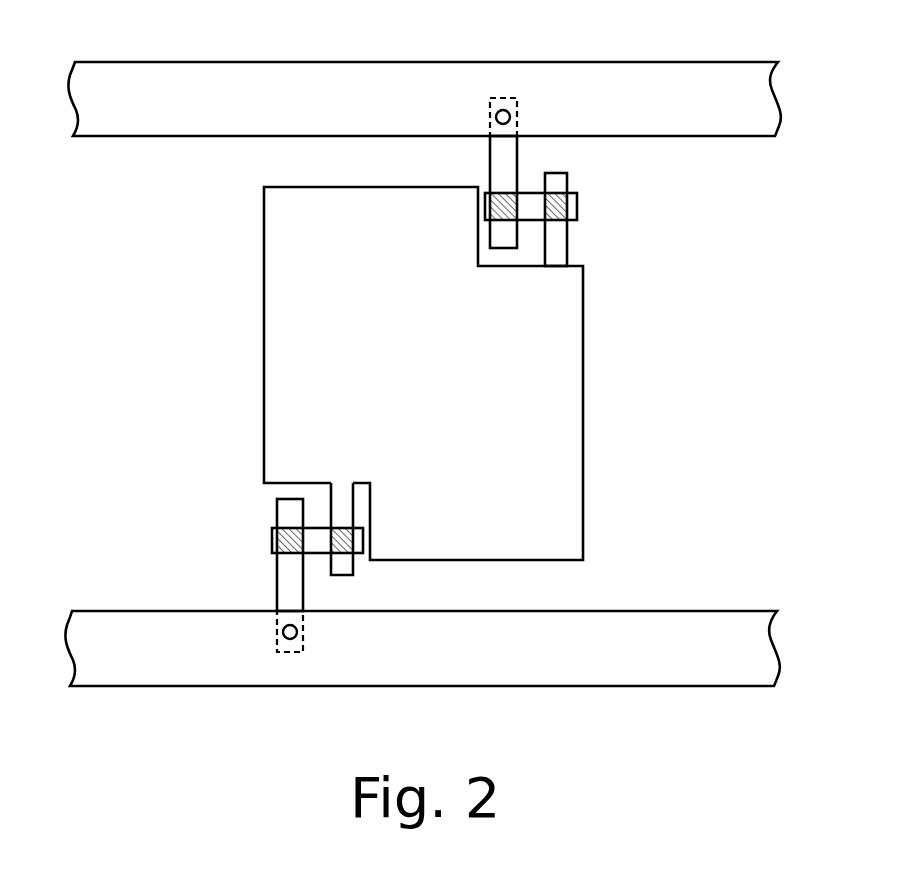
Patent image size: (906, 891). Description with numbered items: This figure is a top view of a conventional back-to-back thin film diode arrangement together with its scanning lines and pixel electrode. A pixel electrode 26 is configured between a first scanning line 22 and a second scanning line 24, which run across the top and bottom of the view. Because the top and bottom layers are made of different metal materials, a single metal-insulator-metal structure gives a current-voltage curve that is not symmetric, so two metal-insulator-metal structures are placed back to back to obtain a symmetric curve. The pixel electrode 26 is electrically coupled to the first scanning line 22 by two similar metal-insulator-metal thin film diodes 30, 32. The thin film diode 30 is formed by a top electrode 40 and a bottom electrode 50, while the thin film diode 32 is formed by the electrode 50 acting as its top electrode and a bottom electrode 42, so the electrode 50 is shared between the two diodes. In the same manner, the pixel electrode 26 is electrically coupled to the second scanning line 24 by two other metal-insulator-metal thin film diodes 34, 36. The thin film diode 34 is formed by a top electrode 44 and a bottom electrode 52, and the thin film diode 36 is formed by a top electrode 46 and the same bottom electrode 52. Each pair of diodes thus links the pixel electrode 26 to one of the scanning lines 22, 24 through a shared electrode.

The first scanning line 22 is at (118, 80).
The second scanning line 24 is at (118, 667).
The pixel electrode 26 is at (268, 343).
The metal-insulator-metal thin film diode 30 is at (505, 203).
The metal-insulator-metal thin film diode 32 is at (567, 193).
The metal-insulator-metal thin film diode 34 is at (277, 530).
The metal-insulator-metal thin film diode 36 is at (332, 547).
The top electrode 40 is at (498, 155).
The bottom electrode 42 is at (558, 253).
The top electrode 44 is at (285, 587).
The top electrode 46 is at (350, 562).
The electrode 50 is at (570, 208).
The bottom electrode 52 is at (275, 540).